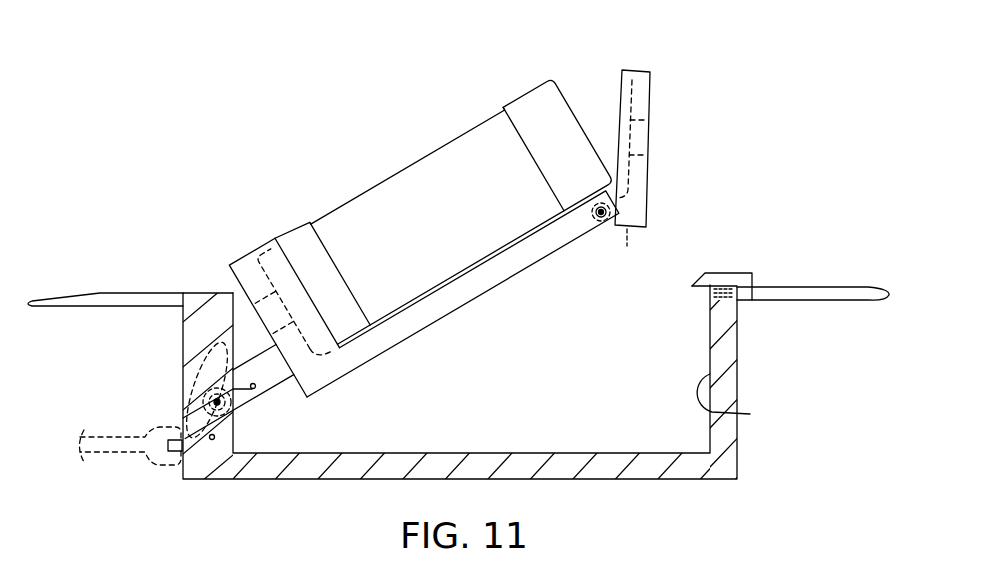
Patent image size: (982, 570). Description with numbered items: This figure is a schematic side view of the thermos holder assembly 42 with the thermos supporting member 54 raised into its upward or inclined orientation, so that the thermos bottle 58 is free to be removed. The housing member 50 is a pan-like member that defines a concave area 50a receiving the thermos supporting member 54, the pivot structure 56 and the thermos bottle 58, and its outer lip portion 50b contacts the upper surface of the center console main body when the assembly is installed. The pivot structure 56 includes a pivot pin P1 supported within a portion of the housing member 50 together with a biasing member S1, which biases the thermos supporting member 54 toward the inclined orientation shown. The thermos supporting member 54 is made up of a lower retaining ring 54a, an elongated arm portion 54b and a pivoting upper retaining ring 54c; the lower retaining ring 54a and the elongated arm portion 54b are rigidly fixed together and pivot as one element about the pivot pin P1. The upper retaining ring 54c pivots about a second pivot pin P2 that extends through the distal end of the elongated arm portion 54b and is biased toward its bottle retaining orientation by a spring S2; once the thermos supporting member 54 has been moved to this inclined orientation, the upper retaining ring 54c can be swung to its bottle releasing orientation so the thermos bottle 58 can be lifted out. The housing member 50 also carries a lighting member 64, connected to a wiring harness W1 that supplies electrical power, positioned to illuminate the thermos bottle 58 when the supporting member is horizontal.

The thermos holder assembly 42 is at (444, 210).
The housing member 50 is at (737, 346).
The concave area 50a is at (745, 402).
The outer lip portion 50b is at (810, 287).
The thermos supporting member 54 is at (461, 212).
The lower retaining ring 54a is at (249, 270).
The elongated arm portion 54b is at (430, 308).
The pivoting upper retaining ring 54c is at (643, 85).
The pivot structure 56 is at (222, 416).
The thermos bottle 58 is at (447, 175).
The lighting member 64 is at (216, 339).
The pivot pin P1 is at (214, 399).
The second pivot pin P2 is at (601, 217).
The biasing member S1 is at (252, 390).
The spring S2 is at (626, 253).
The wiring harness W1 is at (111, 457).